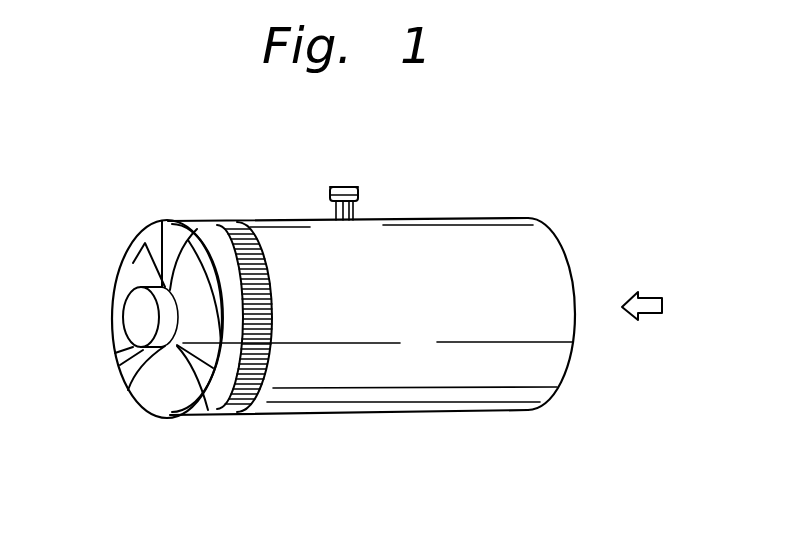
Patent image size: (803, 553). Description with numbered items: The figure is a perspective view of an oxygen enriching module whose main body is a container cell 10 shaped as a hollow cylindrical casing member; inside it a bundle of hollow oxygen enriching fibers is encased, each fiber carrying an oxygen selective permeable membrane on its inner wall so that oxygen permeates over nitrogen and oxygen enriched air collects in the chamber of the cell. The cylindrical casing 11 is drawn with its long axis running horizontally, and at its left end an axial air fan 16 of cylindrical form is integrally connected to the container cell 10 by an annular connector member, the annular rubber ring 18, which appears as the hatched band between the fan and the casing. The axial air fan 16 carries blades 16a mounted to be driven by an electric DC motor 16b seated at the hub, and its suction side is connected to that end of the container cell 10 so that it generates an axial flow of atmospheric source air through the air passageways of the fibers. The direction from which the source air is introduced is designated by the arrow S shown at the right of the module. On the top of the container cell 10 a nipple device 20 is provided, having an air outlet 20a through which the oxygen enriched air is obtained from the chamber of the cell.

The container cell 10 is at (423, 217).
The casing 11 is at (423, 420).
The axial air fan 16 is at (139, 324).
The blades 16a is at (135, 257).
The electric DC motor 16b is at (132, 383).
The annular rubber ring 18 is at (270, 367).
The nipple device 20 is at (361, 170).
The air outlet 20a is at (340, 187).
The arrow S is at (650, 297).